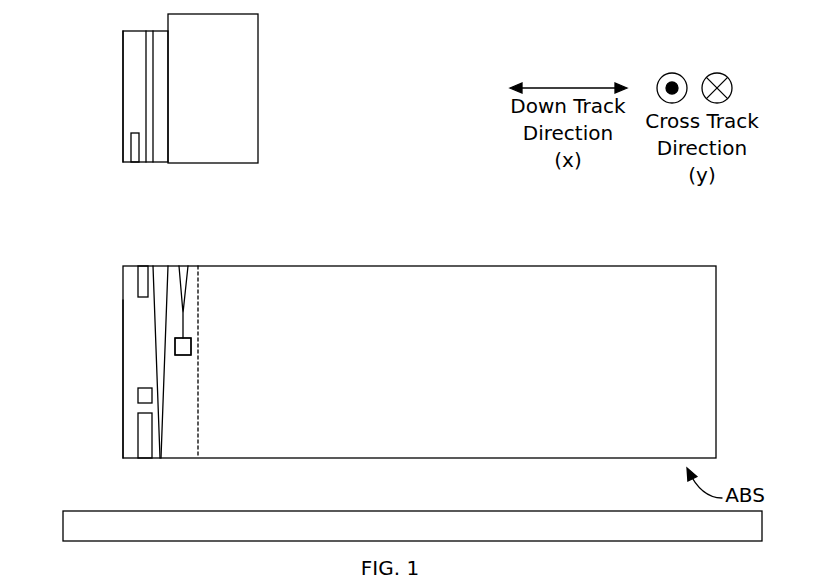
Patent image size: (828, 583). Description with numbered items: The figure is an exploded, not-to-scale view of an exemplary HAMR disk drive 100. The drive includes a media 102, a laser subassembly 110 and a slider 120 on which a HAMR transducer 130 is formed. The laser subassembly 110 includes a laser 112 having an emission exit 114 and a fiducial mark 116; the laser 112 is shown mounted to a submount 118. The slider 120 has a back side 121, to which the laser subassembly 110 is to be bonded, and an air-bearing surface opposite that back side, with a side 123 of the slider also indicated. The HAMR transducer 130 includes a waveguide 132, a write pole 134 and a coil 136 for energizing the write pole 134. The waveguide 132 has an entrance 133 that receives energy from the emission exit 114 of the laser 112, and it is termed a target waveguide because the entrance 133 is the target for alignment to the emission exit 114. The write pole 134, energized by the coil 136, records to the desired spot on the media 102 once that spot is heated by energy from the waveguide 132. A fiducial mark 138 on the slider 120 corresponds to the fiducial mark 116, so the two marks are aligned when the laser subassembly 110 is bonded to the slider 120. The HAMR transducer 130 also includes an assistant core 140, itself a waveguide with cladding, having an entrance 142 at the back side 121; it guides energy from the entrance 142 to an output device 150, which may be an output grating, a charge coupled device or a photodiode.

The HAMR head assembly 100 is at (372, 25).
The media 102 is at (63, 538).
The laser subassembly 110 is at (340, 80).
The laser 112 is at (123, 52).
The emission exit 114 is at (145, 170).
The fiducial mark 116 is at (133, 133).
The submount 118 is at (258, 72).
The slider 120 is at (716, 340).
The back side 121 is at (453, 233).
The slider side 123 is at (108, 358).
The HAMR transducer 130 is at (198, 318).
The waveguide 132 is at (160, 428).
The entrance 133 is at (166, 252).
The write pole 134 is at (138, 415).
The coil 136 is at (138, 398).
The fiducial mark 138 is at (145, 297).
The assistant core 140 is at (187, 295).
The entrance 142 is at (185, 252).
The output device 150 is at (193, 348).